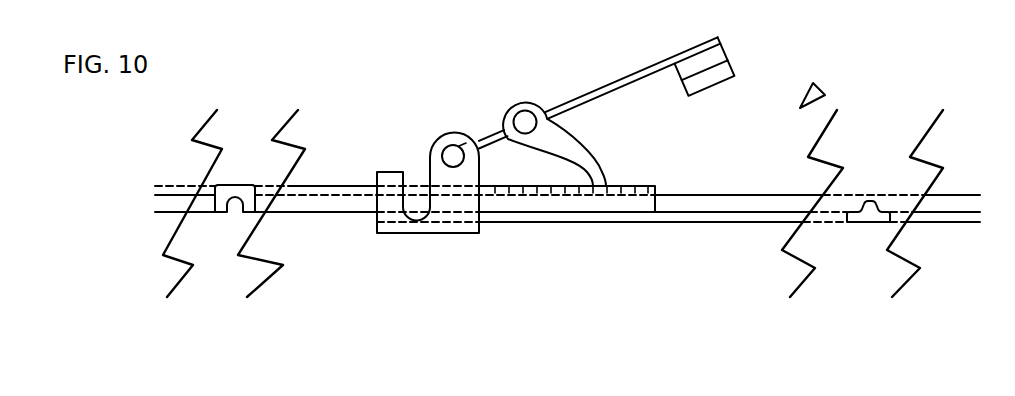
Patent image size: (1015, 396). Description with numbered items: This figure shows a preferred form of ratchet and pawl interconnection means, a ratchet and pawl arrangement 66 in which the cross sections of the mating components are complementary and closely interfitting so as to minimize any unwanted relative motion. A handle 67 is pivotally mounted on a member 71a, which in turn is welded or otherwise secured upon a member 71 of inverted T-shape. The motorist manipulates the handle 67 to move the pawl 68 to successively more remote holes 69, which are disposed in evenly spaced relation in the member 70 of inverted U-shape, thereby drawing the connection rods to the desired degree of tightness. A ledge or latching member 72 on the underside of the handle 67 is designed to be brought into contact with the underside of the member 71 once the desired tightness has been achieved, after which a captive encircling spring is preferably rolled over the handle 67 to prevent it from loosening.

The ratchet and pawl arrangement 66 is at (819, 90).
The handle 67 is at (566, 103).
The pawl 68 is at (590, 152).
The holes 69 is at (634, 186).
The member of inverted U-shape 70 is at (345, 185).
The member of inverted T-shape 71 is at (952, 195).
The member 71a is at (438, 134).
The ledge or latching member 72 is at (712, 86).